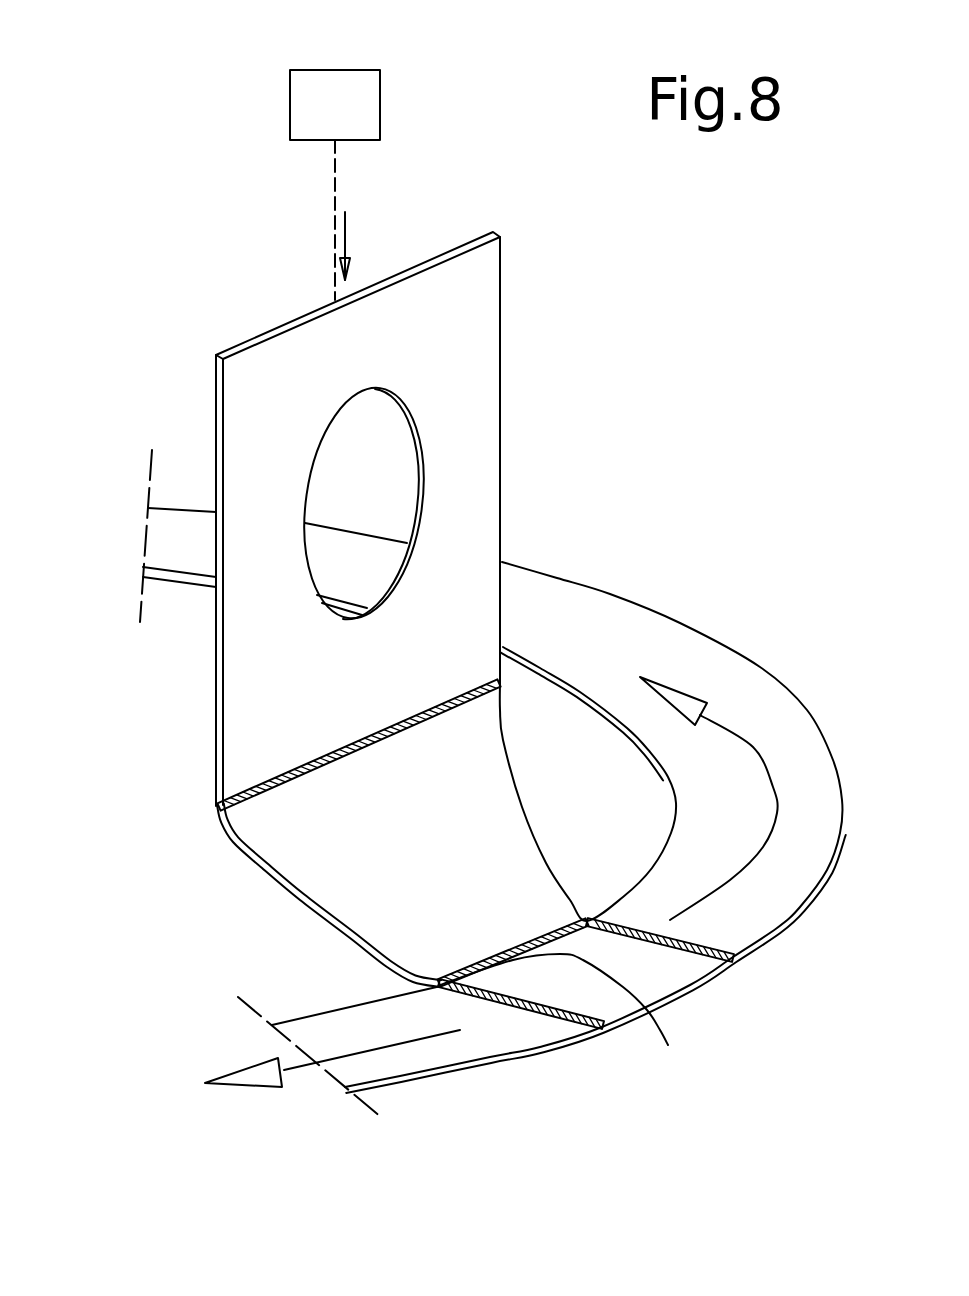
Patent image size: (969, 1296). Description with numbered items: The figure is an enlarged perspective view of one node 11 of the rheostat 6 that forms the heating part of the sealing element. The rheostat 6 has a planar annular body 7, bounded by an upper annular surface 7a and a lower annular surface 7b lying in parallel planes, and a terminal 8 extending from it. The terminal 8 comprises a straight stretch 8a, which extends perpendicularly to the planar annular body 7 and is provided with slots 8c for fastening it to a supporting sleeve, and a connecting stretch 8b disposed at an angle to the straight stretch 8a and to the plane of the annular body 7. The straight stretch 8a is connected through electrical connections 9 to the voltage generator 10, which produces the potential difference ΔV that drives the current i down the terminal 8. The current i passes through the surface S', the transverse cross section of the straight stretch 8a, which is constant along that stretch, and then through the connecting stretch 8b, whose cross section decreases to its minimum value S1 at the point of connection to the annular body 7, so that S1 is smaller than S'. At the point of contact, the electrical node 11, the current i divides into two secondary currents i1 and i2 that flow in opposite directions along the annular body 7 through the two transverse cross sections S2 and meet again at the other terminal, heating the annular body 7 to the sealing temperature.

The voltage generator 10 is at (365, 83).
The electrical connections 9 is at (333, 202).
The current i is at (347, 235).
The terminal 8 is at (500, 280).
The straight stretch 8a is at (257, 395).
The connecting stretch 8b is at (273, 855).
The slots 8c is at (397, 442).
The rheostat 6 is at (660, 380).
The annular body 7 is at (562, 572).
The upper annular surface 7a is at (393, 1080).
The lower annular surface 7b is at (303, 1012).
The transverse cross section of terminal S' is at (465, 647).
The cross section at connection point S1 is at (667, 990).
The transverse cross sections of annular body S2 is at (712, 965).
The secondary current i1 is at (767, 773).
The secondary current i2 is at (303, 1070).
The electrical node 11 is at (690, 953).